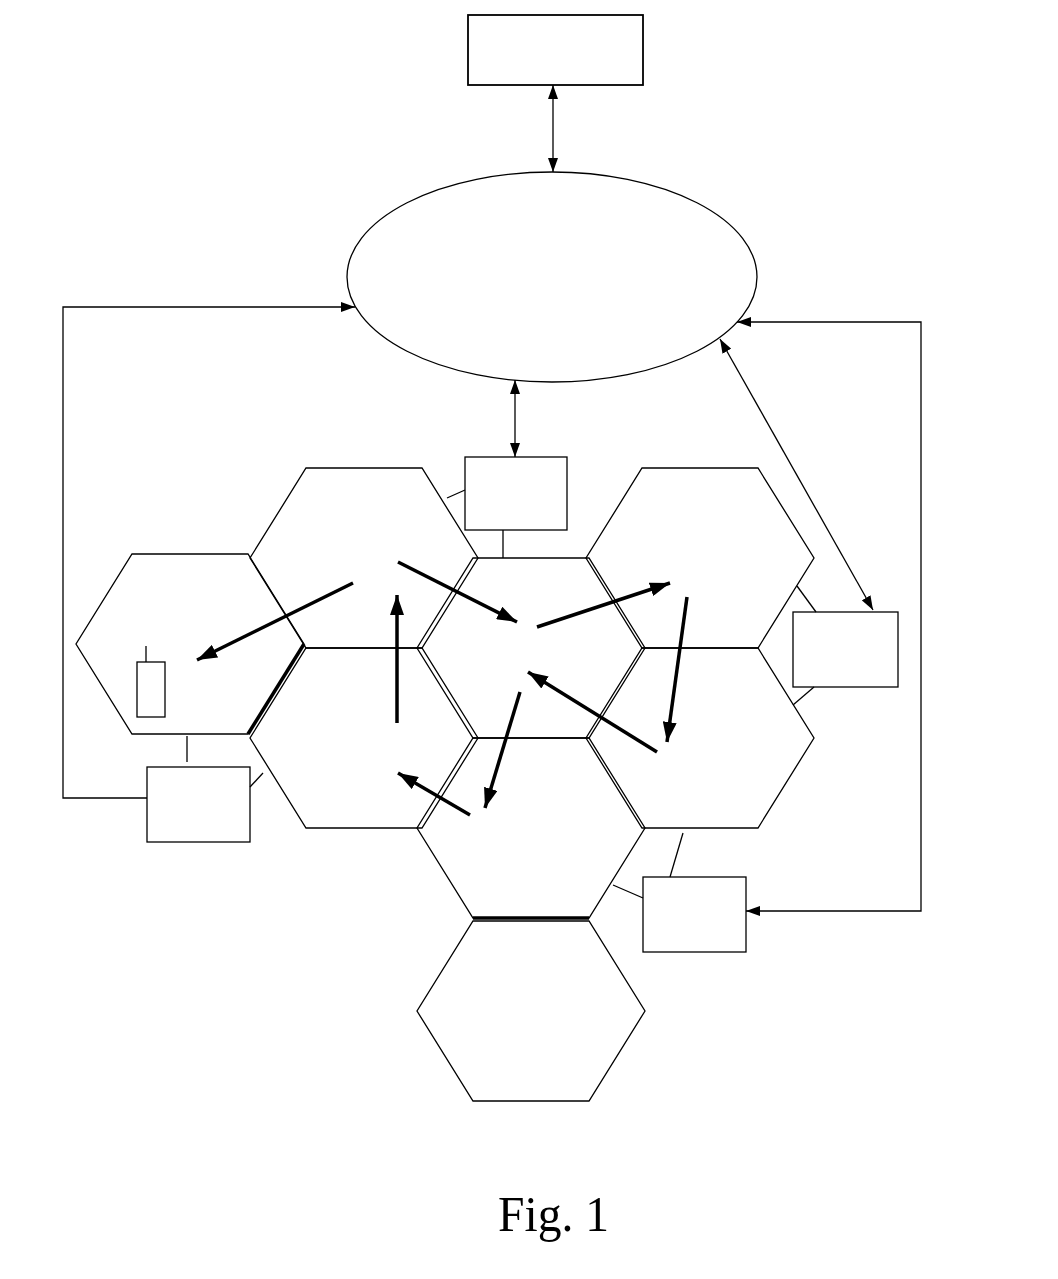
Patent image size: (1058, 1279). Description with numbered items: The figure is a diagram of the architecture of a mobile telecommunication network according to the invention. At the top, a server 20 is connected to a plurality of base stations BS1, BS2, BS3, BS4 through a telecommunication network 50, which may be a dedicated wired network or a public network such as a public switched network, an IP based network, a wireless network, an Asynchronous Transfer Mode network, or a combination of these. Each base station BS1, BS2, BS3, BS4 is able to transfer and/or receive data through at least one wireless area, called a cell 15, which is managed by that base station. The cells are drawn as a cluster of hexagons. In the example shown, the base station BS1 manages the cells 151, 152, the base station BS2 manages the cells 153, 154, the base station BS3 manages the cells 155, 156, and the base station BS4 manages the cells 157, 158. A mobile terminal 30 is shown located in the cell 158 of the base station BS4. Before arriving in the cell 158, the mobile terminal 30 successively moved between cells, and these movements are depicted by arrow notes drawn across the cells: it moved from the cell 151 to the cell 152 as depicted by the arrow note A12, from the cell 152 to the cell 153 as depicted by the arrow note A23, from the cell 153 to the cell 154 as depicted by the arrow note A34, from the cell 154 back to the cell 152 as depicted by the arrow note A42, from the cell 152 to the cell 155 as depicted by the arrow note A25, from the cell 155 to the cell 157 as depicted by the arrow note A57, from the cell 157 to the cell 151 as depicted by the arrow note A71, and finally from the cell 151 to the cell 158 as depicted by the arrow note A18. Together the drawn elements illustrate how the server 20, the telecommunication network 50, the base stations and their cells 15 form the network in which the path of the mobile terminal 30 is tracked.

The server 20 is at (468, 60).
The telecommunication network 50 is at (443, 210).
The mobile terminal 30 is at (146, 709).
The cell 15 is at (445, 784).
The cell 151 is at (364, 558).
The cell 152 is at (531, 648).
The cell 153 is at (700, 558).
The cell 154 is at (700, 738).
The cell 155 is at (531, 828).
The cell 156 is at (531, 1011).
The cell 157 is at (364, 738).
The cell 158 is at (190, 644).
The base station BS1 is at (507, 507).
The base station BS2 is at (845, 645).
The base station BS3 is at (679, 892).
The base station BS4 is at (205, 789).
The arrow note A12 is at (457, 589).
The arrow note A18 is at (275, 621).
The arrow note A23 is at (603, 605).
The arrow note A25 is at (515, 750).
The arrow note A34 is at (695, 669).
The arrow note A42 is at (592, 712).
The arrow note A57 is at (434, 785).
The arrow note A71 is at (374, 659).